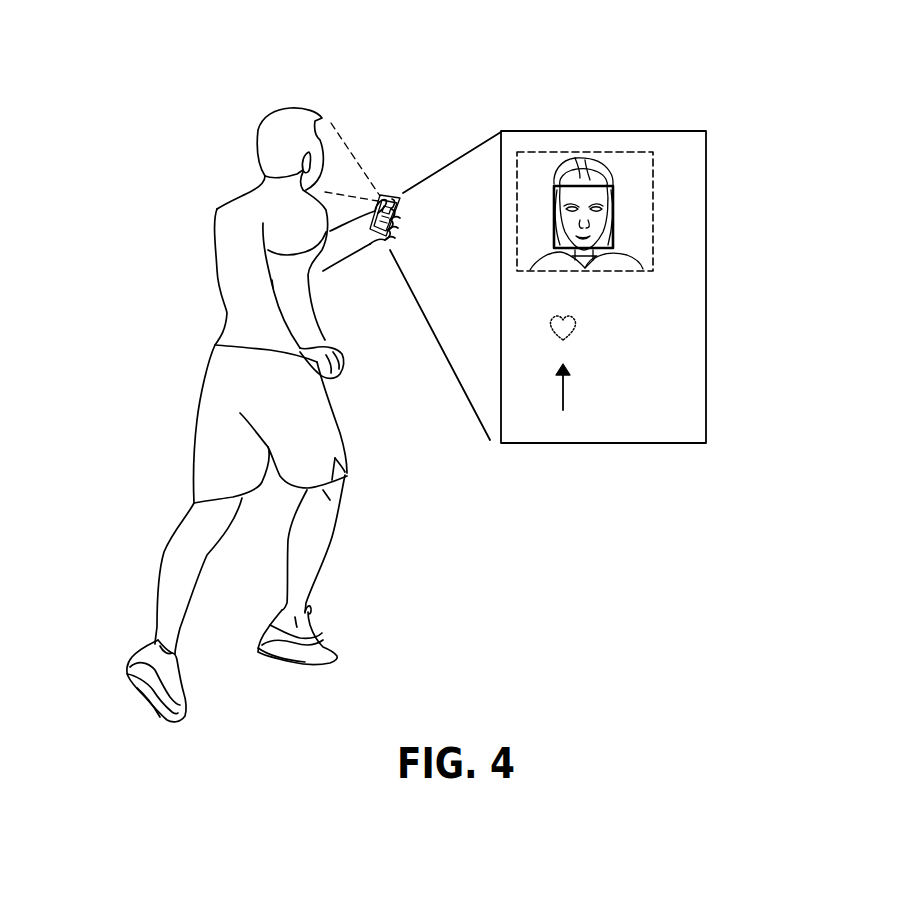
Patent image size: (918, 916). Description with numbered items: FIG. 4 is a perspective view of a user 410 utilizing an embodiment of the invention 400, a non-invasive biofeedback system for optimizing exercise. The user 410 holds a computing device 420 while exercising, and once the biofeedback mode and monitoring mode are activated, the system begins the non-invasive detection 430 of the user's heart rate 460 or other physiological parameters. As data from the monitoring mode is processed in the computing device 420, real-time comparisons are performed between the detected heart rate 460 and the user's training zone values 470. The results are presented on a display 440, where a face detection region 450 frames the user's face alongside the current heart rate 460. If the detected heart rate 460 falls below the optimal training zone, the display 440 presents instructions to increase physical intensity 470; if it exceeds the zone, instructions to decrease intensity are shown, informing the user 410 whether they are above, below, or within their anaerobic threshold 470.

The embodiment of the invention 400 is at (163, 52).
The user 410 is at (235, 190).
The computing device 420 is at (372, 240).
The non-invasive detection 430 is at (385, 194).
The display 440 is at (592, 122).
The face detection region 450 is at (665, 192).
The heart rate 460 is at (692, 333).
The instructions to increase physical intensity 470 is at (692, 389).